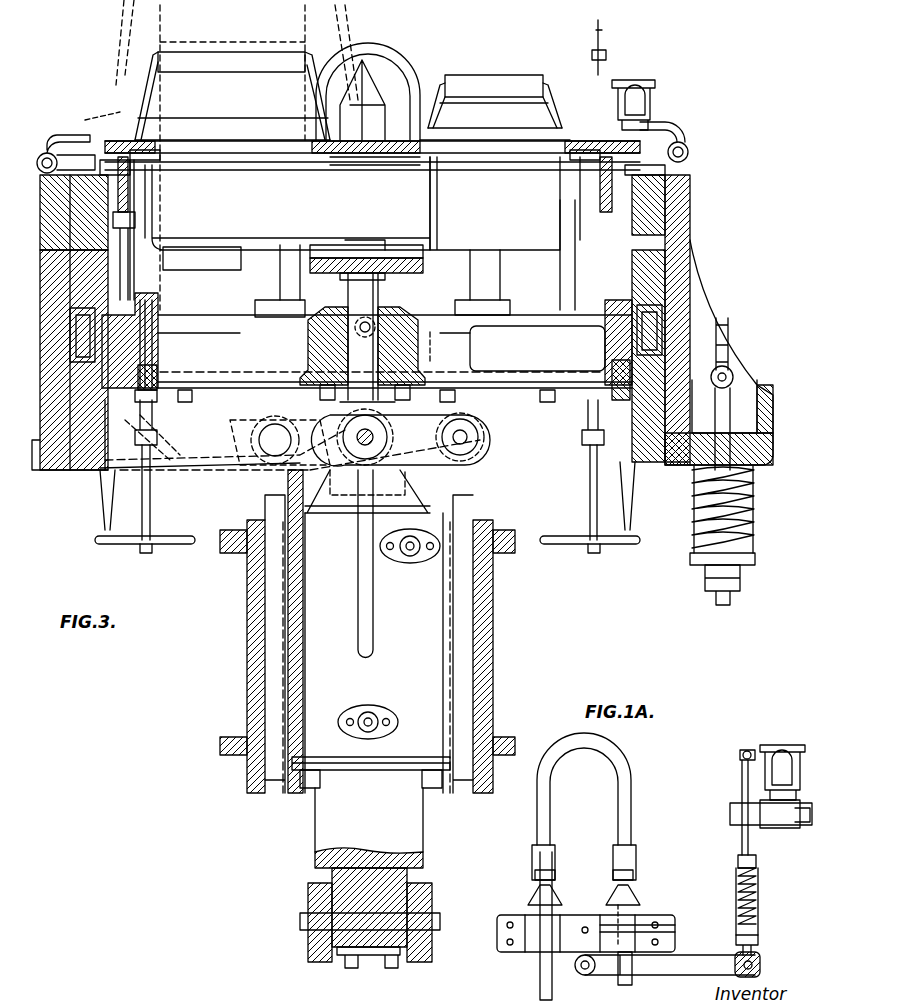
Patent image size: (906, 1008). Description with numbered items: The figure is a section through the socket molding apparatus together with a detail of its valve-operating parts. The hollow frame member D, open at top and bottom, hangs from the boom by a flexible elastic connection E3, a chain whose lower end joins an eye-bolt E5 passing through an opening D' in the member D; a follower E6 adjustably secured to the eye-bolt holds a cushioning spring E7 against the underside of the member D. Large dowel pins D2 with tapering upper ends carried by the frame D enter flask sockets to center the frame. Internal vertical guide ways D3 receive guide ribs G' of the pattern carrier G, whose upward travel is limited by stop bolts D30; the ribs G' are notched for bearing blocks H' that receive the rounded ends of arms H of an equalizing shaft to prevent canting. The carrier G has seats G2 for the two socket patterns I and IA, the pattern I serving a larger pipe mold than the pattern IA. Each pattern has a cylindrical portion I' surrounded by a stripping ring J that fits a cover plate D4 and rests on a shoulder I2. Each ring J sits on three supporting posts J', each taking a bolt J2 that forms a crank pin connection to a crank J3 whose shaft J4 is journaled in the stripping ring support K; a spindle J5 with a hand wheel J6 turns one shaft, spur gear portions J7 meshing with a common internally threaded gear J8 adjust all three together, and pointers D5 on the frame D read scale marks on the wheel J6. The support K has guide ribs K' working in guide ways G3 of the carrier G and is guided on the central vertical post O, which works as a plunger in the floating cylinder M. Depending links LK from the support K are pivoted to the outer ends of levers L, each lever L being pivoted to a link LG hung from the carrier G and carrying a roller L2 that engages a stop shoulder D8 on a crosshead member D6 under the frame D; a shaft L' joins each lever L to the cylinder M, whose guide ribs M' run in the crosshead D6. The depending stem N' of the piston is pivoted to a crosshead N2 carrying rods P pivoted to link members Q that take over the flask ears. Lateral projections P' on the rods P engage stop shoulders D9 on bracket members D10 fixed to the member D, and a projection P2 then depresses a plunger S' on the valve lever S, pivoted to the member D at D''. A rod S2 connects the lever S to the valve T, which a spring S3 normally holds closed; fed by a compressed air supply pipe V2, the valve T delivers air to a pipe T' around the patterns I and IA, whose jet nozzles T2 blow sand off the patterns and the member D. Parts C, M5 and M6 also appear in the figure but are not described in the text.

In FIG. 3, the steam pipe C is at (338, 30).
In FIG. 3, the link member Q is at (405, 60).
In FIG. 1A, the link member Q is at (552, 790).
In FIG. 3, the dowel pin D2 is at (350, 112).
In FIG. 3, the socket pattern I is at (225, 155).
In FIG. 3, the cylindrical portion I' is at (353, 111).
In FIG. 3, the shoulder I2 is at (328, 162).
In FIG. 3, the socket pattern IA is at (432, 195).
In FIG. 3, the stripping ring J is at (365, 147).
In FIG. 3, the supporting post J' is at (362, 228).
In FIG. 3, the bolt J2 is at (135, 290).
In FIG. 3, the crank J3 is at (120, 268).
In FIG. 3, the crank shaft J4 is at (158, 345).
In FIG. 3, the spindle J5 is at (170, 503).
In FIG. 3, the hand wheel J6 is at (100, 545).
In FIG. 3, the spur gear portion J7 is at (158, 372).
In FIG. 3, the internally threaded gear J8 is at (345, 345).
In FIG. 3, the stripping ring support K is at (517, 348).
In FIG. 3, the guide rib K' is at (148, 337).
In FIG. 3, the operating valve lever S is at (395, 351).
In FIG. 1A, the operating valve lever S is at (672, 978).
In FIG. 3, the pattern carrier G is at (362, 336).
In FIG. 3, the guide rib G' is at (369, 212).
In FIG. 3, the seat G2 is at (377, 264).
In FIG. 3, the vertical guide way G3 is at (160, 240).
In FIG. 3, the central vertical post O is at (365, 306).
In FIG. 3, the frame member D is at (682, 348).
In FIG. 3, the opening D' is at (734, 445).
In FIG. 3, the pivot D'' is at (365, 368).
In FIG. 1A, the pivot D'' is at (581, 979).
In FIG. 3, the internal vertical guide way D3 is at (690, 232).
In FIG. 3, the cover plate D4 is at (115, 135).
In FIG. 3, the pointer D5 is at (102, 500).
In FIG. 3, the crosshead or yoke member D6 is at (495, 592).
In FIG. 3, the stop shoulder D8 is at (480, 515).
In FIG. 1A, the stop shoulder D9 is at (525, 950).
In FIG. 1A, the bracket member D10 is at (497, 920).
In FIG. 3, the stop bolt D30 is at (90, 150).
In FIG. 3, the arm H is at (372, 315).
In FIG. 3, the bearing block H' is at (366, 334).
In FIG. 3, the valve T is at (652, 98).
In FIG. 1A, the valve T is at (782, 759).
In FIG. 3, the pipe T' is at (370, 143).
In FIG. 1A, the pipe T' is at (759, 807).
In FIG. 3, the jet nozzle T2 is at (60, 122).
In FIG. 3, the lever L is at (290, 450).
In FIG. 3, the shaft L' is at (397, 434).
In FIG. 3, the roller L2 is at (475, 450).
In FIG. 3, the link LG is at (265, 405).
In FIG. 3, the depending link LK is at (150, 420).
In FIG. 3, the floating cylinder M is at (374, 631).
In FIG. 3, the vertical guide rib M' is at (364, 631).
In FIG. 3, the port M5 is at (370, 712).
In FIG. 3, the port M6 is at (410, 552).
In FIG. 3, the piston stem N' is at (371, 852).
In FIG. 3, the crosshead N2 is at (310, 892).
In FIG. 3, the flexible elastic connection E3 is at (732, 322).
In FIG. 3, the eye-bolt E5 is at (728, 415).
In FIG. 3, the follower E6 is at (745, 568).
In FIG. 3, the cushioning spring E7 is at (755, 520).
In FIG. 1A, the rod P is at (547, 929).
In FIG. 1A, the lateral projection P' is at (582, 884).
In FIG. 1A, the lateral projection P2 is at (610, 895).
In FIG. 1A, the plunger S' is at (651, 917).
In FIG. 3, the rod S2 is at (605, 70).
In FIG. 1A, the rod S2 is at (756, 862).
In FIG. 1A, the spring S3 is at (758, 900).
In FIG. 1A, the compressed air supply pipe V2 is at (740, 765).